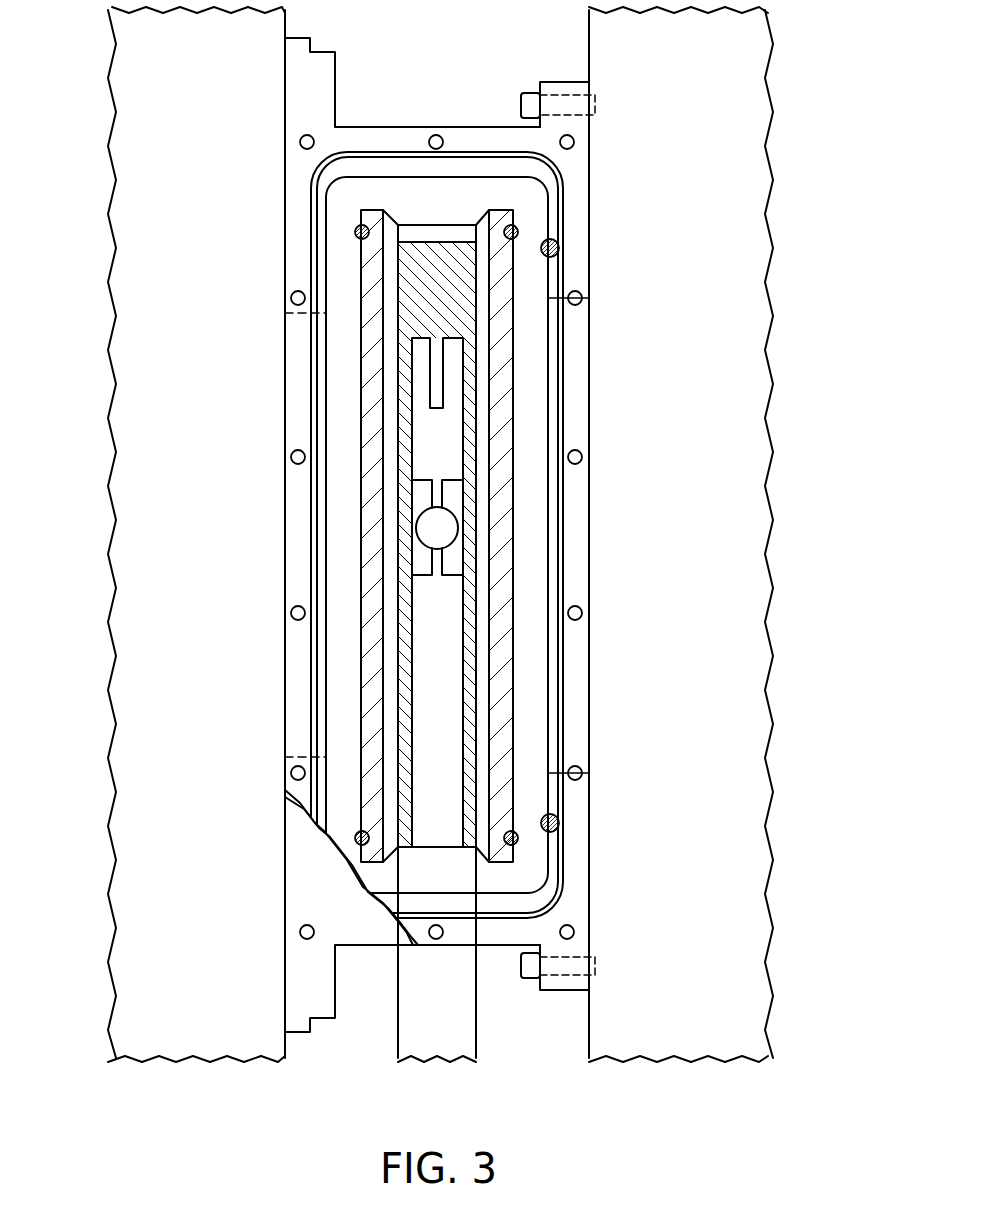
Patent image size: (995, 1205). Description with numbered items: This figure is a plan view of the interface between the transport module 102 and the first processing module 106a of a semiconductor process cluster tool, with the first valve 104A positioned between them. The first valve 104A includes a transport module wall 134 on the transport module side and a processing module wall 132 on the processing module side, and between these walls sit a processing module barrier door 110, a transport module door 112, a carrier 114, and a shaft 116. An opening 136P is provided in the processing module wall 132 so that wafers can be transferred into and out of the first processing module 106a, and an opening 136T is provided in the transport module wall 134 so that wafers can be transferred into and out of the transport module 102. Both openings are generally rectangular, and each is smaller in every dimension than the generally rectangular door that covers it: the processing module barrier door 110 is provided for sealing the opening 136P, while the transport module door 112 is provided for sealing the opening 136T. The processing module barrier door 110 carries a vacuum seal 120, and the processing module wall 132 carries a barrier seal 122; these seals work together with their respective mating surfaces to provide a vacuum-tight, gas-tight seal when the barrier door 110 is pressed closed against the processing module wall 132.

The transport module 102 is at (196, 534).
The first processing module 106a is at (681, 534).
The first valve 104A is at (424, 512).
The processing module barrier door 110 is at (500, 402).
The transport module door 112 is at (372, 267).
The carrier 114 is at (445, 323).
The shaft 116 is at (436, 671).
The vacuum seal 120 is at (518, 230).
The barrier seal 122 is at (560, 246).
The processing module wall 132 is at (575, 371).
The transport module wall 134 is at (295, 372).
The opening 136P is at (641, 519).
The opening 136T is at (233, 519).